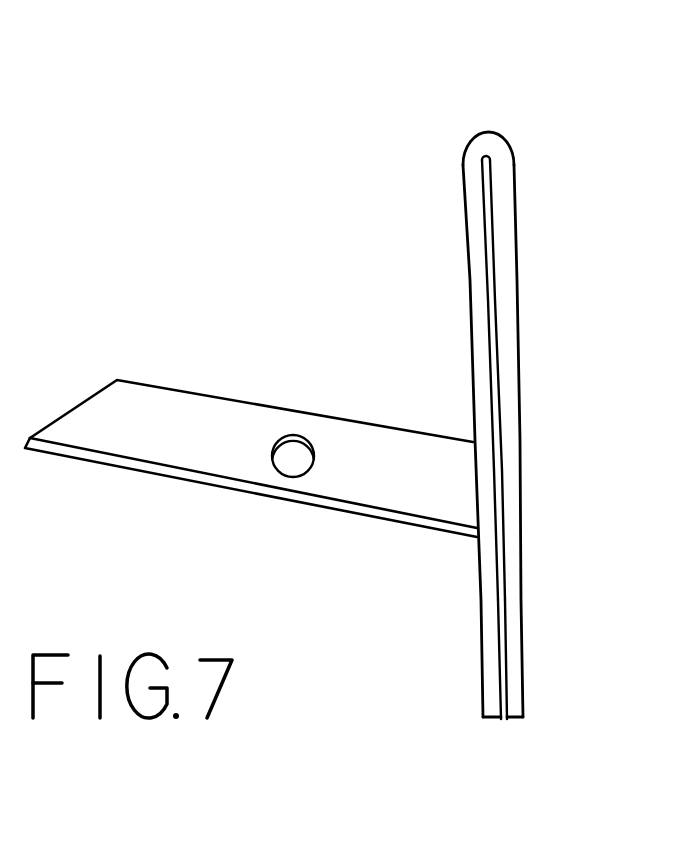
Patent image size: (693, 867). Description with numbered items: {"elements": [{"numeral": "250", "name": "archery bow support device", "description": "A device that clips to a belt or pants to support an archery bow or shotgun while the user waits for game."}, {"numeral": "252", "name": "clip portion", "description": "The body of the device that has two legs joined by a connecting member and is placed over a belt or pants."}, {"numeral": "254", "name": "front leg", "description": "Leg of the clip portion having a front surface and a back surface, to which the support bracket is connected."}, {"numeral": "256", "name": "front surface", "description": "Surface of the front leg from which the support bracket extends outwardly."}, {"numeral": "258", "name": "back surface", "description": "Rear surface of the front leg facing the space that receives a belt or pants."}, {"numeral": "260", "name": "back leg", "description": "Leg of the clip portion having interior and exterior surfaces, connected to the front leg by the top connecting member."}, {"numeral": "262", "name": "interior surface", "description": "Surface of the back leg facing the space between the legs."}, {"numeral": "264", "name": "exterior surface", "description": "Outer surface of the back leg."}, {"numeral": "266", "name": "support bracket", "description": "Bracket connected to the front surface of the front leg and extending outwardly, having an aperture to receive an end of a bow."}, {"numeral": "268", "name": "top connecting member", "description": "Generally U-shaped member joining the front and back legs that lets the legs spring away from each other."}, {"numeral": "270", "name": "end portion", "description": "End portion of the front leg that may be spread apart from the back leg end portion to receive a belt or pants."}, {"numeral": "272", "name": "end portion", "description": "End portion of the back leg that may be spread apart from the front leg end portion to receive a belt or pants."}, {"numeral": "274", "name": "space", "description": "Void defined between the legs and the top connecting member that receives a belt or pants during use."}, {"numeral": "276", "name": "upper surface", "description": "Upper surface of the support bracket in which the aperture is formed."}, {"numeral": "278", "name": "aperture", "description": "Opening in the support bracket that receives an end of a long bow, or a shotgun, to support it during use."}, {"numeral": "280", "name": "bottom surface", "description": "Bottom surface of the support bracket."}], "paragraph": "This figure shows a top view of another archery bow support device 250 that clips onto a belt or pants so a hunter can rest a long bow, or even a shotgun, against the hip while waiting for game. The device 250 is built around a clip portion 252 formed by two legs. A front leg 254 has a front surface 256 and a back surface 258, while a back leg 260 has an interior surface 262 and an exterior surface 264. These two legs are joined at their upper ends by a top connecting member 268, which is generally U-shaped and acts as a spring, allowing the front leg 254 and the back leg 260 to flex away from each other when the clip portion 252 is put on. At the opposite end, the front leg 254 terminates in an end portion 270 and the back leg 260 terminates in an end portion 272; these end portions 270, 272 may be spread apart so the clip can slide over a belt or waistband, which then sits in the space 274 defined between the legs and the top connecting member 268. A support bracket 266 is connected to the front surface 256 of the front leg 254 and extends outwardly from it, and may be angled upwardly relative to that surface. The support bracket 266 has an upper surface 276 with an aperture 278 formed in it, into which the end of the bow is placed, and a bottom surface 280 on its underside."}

The mounting clip assembly 250 is at (236, 172).
The stake member 252 is at (575, 183).
The first leg of stake 254 is at (428, 293).
The outer edge of first leg 256 is at (472, 357).
The slot 258 is at (492, 316).
The second leg of stake 260 is at (548, 408).
The lower slot portion 262 is at (503, 602).
The outer edge of second leg 264 is at (521, 527).
The plate 266 is at (182, 313).
The rounded top end 268 is at (482, 120).
The first prong end 270 is at (492, 719).
The second prong end 272 is at (513, 719).
The slot inner edge 274 is at (497, 476).
The top surface of plate 276 is at (200, 430).
The aperture 278 is at (292, 460).
The front edge of plate 280 is at (111, 466).